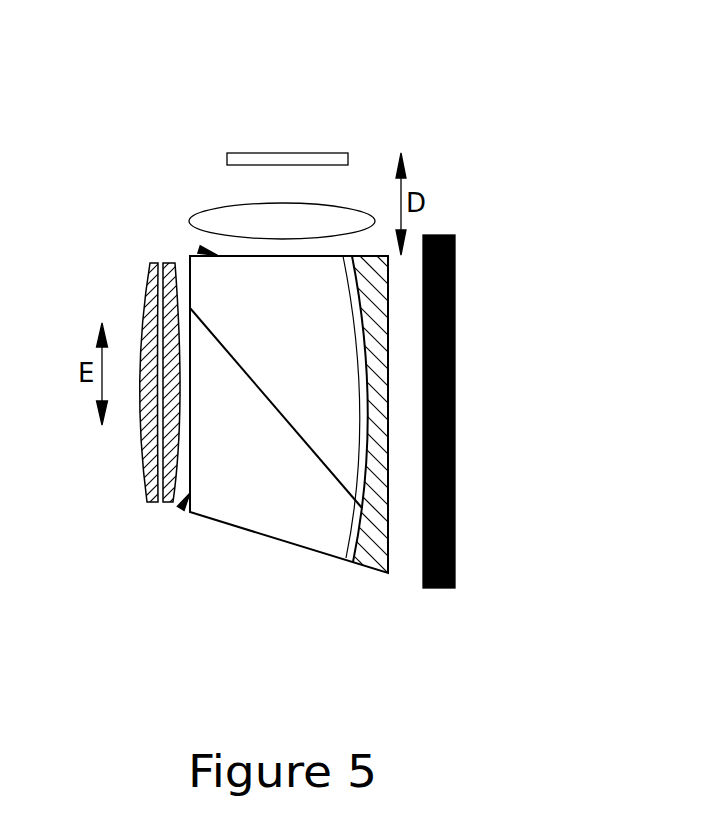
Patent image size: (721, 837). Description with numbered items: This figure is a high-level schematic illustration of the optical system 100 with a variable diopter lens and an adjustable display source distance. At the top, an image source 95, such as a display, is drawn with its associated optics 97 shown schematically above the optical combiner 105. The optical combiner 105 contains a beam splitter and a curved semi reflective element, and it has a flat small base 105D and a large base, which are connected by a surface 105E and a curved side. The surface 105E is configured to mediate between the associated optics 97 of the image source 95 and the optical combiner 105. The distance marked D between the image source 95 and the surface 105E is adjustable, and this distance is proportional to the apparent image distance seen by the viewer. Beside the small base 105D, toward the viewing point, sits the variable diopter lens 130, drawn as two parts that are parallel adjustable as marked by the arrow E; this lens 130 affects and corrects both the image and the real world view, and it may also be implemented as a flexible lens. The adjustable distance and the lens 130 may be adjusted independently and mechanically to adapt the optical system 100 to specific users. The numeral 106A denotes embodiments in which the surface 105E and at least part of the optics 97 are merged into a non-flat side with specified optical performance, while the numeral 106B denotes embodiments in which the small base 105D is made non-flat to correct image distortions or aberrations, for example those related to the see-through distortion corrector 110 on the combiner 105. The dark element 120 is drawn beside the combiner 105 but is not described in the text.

The optical system 100 is at (86, 40).
The image source 95 is at (248, 153).
The associated optics 97 is at (209, 210).
The optical combiner 105 is at (367, 456).
The surface 105E is at (118, 269).
The merged surface and optics embodiment 106A is at (205, 251).
The small base 105D is at (153, 566).
The non-flat small base embodiment 106B is at (152, 566).
The see-through distortion corrector 110 is at (386, 546).
The eye-side element 120 is at (455, 518).
The variable diopter lens 130 is at (148, 479).